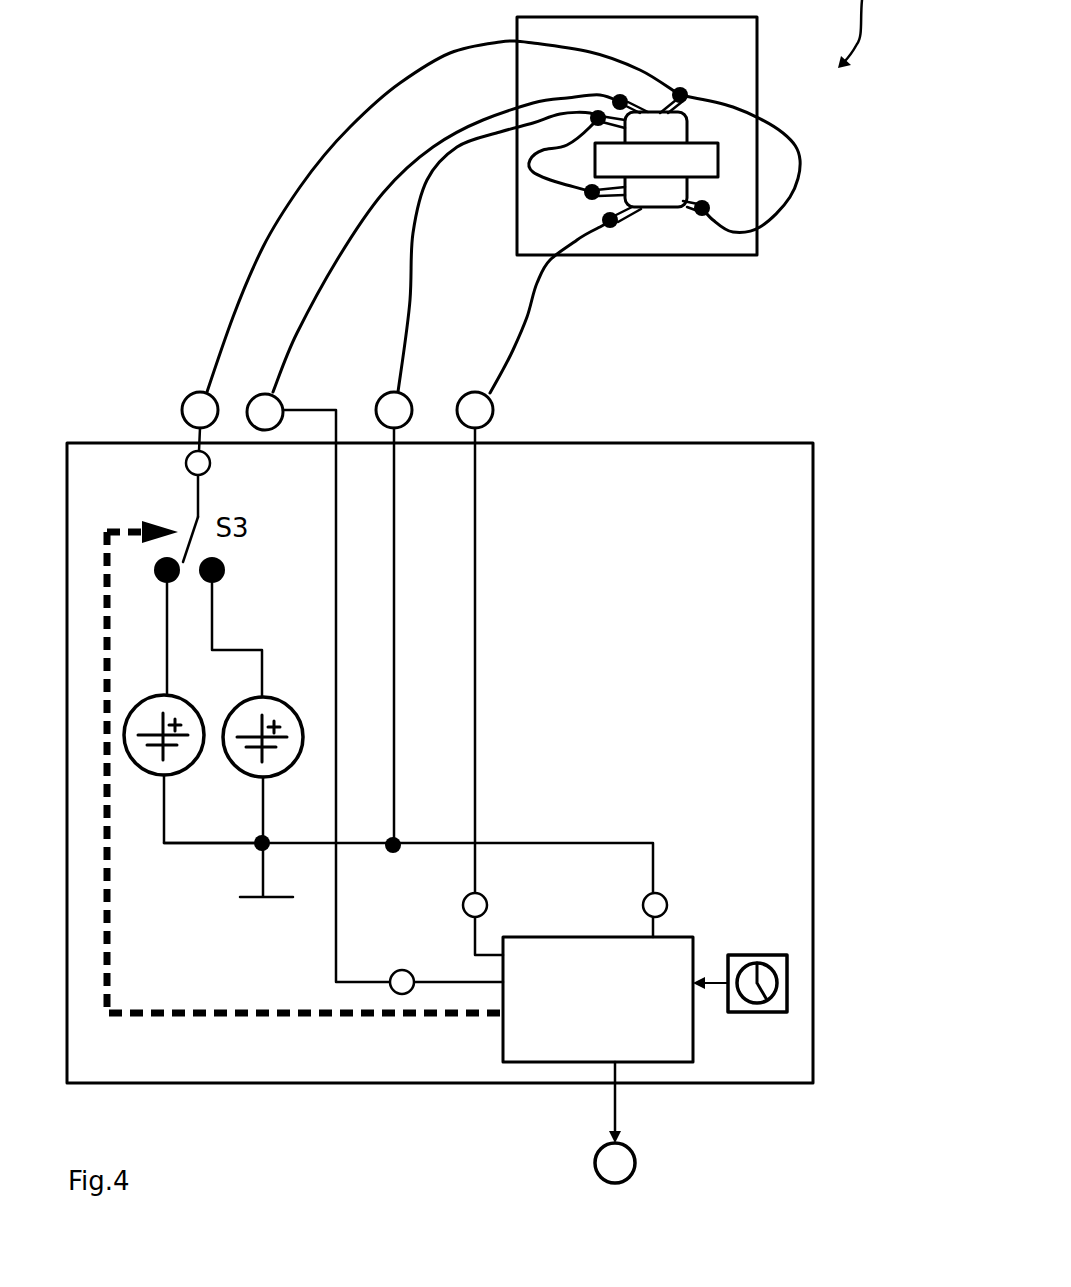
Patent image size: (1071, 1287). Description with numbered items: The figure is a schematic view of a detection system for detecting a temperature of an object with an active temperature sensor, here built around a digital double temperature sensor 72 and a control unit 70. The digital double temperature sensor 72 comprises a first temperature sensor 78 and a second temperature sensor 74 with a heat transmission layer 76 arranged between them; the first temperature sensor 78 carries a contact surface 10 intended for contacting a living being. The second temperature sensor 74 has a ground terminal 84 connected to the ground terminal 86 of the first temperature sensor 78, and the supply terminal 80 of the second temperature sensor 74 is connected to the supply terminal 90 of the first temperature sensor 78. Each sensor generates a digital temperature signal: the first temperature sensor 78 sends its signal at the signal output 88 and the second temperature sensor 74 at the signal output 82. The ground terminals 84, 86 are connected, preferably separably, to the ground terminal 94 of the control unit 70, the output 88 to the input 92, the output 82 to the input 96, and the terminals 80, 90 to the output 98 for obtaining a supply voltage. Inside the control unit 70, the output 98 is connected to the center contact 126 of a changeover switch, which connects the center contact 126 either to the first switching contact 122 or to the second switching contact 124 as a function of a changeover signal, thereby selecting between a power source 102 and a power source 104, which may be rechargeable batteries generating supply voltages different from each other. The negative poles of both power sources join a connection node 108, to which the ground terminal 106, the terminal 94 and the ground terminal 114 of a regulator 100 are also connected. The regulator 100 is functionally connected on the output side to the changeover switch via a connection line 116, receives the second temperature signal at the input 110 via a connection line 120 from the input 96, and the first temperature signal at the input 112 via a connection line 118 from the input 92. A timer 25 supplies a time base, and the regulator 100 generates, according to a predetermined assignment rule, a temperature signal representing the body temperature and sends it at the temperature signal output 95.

The contact surface 10 is at (656, 216).
The timer 25 is at (766, 1013).
The control unit 70 is at (712, 440).
The digital double temperature sensor 72 is at (760, 78).
The second temperature sensor 74 is at (680, 131).
The heat transmission layer 76 is at (710, 158).
The first temperature sensor 78 is at (680, 190).
The terminal 80 is at (681, 88).
The signal output 82 is at (622, 94).
The ground terminal 84 is at (592, 112).
The ground terminal 86 is at (590, 199).
The signal output 88 is at (609, 228).
The terminal 90 is at (702, 216).
The input 92 is at (493, 410).
The ground terminal 94 is at (414, 400).
The temperature signal output 95 is at (635, 1163).
The input 96 is at (282, 396).
The output 98 is at (190, 393).
The regulator 100 is at (548, 937).
The power source 102 is at (288, 706).
The power source 104 is at (178, 766).
The ground terminal 106 is at (272, 880).
The connection node 108 is at (255, 846).
The input 110 is at (395, 972).
The input 112 is at (488, 900).
The ground terminal 114 is at (668, 908).
The connection line 116 is at (396, 606).
The connection line 118 is at (479, 698).
The connection line 120 is at (337, 701).
The first switching contact 122 is at (226, 571).
The second switching contact 124 is at (178, 578).
The center contact 126 is at (210, 466).